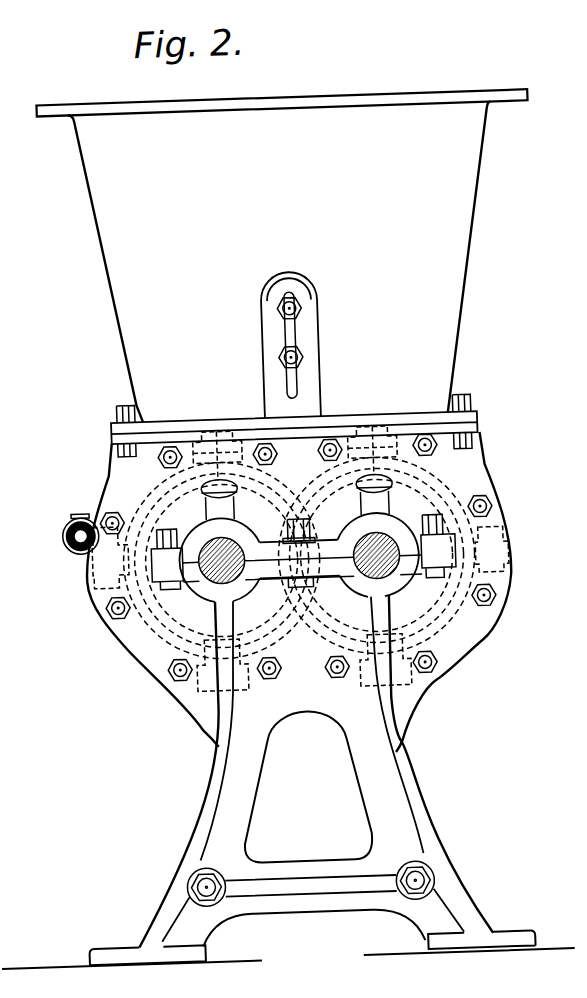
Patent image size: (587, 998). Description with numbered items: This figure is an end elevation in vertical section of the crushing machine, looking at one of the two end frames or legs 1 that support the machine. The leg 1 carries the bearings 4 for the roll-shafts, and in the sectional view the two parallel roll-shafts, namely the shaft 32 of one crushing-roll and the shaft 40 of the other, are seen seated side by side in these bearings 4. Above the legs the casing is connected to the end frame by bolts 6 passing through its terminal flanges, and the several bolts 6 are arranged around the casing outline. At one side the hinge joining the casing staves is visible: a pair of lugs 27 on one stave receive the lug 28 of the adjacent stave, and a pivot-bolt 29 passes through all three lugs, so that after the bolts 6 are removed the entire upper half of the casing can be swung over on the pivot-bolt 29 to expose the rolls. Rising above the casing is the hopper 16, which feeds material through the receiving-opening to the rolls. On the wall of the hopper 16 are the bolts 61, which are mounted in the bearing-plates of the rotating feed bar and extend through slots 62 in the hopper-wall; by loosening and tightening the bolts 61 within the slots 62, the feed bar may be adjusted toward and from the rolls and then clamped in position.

The end frame or leg 1 is at (190, 785).
The bearings 4 is at (350, 534).
The bolts 6 is at (101, 515).
The hopper 16 is at (334, 133).
The lugs 27 is at (88, 507).
The lug 28 is at (77, 562).
The pivot-bolt 29 is at (68, 531).
The shaft 32 is at (217, 565).
The shaft 40 is at (385, 551).
The bolts 61 is at (286, 354).
The slots 62 is at (303, 329).